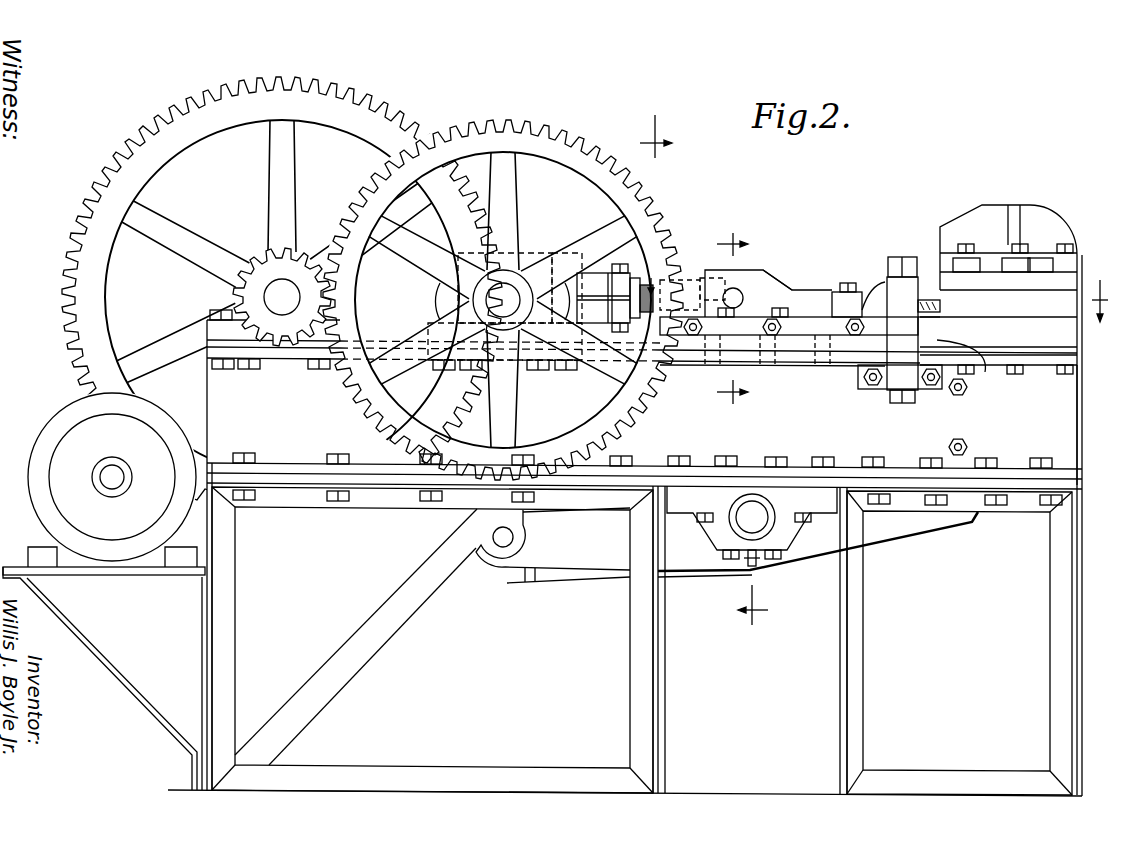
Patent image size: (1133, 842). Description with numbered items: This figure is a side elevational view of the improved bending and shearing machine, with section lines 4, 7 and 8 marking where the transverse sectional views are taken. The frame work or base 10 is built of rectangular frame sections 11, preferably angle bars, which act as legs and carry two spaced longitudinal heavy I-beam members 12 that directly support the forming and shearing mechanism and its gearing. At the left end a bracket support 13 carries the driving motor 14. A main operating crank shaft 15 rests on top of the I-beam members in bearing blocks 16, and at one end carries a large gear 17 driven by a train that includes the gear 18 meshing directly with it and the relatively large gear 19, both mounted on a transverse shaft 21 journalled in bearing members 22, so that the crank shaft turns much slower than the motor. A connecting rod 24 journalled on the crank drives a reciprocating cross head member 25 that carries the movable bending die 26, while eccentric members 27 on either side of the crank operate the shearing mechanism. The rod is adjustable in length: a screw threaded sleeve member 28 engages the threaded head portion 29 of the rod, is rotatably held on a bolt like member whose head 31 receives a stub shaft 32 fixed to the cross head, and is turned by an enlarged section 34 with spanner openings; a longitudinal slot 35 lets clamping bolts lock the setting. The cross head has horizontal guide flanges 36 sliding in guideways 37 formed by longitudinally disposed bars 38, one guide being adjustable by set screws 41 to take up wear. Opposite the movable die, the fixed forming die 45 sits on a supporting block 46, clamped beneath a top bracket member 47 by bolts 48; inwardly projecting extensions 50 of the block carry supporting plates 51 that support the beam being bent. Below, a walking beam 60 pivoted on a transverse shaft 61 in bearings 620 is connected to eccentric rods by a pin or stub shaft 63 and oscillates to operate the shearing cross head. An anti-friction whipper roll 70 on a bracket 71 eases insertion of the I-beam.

The section line 4— 4 is at (704, 371).
The section line 7— 7 is at (876, 289).
The section line 8— 8 is at (732, 318).
The frame work or base 10 is at (1084, 538).
The rectangular frame sections 11 is at (656, 740).
The I-beam members 12 is at (1080, 412).
The bracket support 13 is at (64, 618).
The driving motor 14 is at (160, 422).
The main operating crank shaft 15 is at (503, 290).
The bearing blocks 16 is at (550, 262).
The gear 17 is at (503, 289).
The gear 18 is at (260, 297).
The gear 19 is at (282, 297).
The transverse shaft 21 is at (282, 290).
The bearing members 22 is at (240, 258).
The connecting rod 24 is at (588, 282).
The cross head member 25 is at (802, 292).
The movable bending die 26 is at (842, 290).
The eccentric members 27 is at (432, 300).
The screw threaded sleeve member 28 is at (684, 262).
The head portion of connecting rod 29 is at (615, 283).
The head of bolt like member 31 is at (768, 280).
The stub shaft 32 is at (743, 300).
The enlarged section of sleeve 34 is at (702, 290).
The longitudinal slot 35 is at (603, 309).
The guide flanges 36 is at (705, 362).
The guideways 37 is at (760, 352).
The longitudinally disposed bars 38 is at (816, 345).
The set screws 41 is at (790, 330).
The fixed forming die 45 is at (1008, 262).
The supporting block 46 is at (1074, 335).
The top bracket member 47 is at (1072, 240).
The bolts 48 is at (1010, 252).
The inwardly projecting extensions 50 is at (968, 387).
The supporting plates 51 is at (938, 312).
The walking beam 60 is at (915, 536).
The transverse shaft 61 is at (766, 513).
The transverse pin or stub shaft 63 is at (510, 537).
The anti-friction whipper roll 70 is at (920, 340).
The bracket 71 is at (920, 393).
The bearings 620 is at (728, 560).